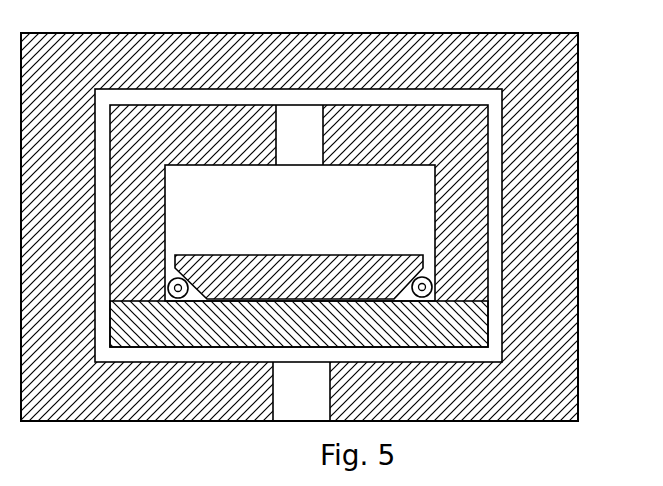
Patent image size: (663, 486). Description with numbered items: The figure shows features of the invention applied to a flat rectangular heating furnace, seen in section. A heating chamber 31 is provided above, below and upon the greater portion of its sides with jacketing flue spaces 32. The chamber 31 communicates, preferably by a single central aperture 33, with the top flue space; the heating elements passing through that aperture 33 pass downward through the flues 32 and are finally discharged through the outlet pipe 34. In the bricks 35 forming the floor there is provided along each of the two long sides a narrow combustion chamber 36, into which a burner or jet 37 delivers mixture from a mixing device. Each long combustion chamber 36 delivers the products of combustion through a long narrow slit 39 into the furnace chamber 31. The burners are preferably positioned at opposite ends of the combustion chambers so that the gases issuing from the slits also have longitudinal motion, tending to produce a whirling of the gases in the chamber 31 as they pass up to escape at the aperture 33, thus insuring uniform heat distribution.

The heating chamber 31 is at (300, 233).
The jacketing flue spaces 32 is at (190, 97).
The central aperture 33 is at (299, 135).
The outlet pipe 34 is at (301, 391).
The bricks 35 is at (242, 302).
The combustion chamber 36 is at (208, 292).
The burner 37 is at (436, 285).
The slit 39 is at (171, 278).